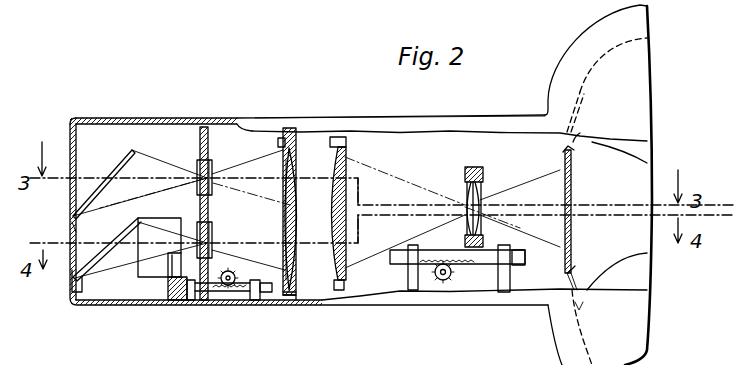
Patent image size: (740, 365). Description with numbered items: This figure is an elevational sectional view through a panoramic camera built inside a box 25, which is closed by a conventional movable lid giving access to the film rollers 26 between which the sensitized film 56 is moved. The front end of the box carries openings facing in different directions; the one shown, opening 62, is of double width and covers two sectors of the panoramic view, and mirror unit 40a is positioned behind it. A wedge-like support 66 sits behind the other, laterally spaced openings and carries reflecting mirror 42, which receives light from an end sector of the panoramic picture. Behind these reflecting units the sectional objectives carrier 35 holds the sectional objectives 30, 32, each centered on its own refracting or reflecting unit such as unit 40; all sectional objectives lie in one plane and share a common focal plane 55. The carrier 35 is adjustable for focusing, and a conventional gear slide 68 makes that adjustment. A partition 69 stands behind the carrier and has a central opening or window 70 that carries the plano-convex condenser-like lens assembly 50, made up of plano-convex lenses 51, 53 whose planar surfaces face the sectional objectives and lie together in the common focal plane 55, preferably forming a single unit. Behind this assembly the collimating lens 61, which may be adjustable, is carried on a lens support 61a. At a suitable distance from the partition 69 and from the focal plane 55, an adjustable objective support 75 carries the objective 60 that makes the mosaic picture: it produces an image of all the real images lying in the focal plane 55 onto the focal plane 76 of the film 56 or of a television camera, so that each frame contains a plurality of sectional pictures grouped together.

The box 25 is at (157, 305).
The film rollers 26 is at (627, 345).
The sectional objective 30 is at (212, 172).
The sectional objective 32 is at (212, 255).
The sectional objectives carrier 35 is at (210, 210).
The refracting or reflecting unit 40 is at (108, 177).
The mirror unit 40a is at (107, 245).
The reflecting mirror 42 is at (140, 268).
The plano-convex condenser-like lens assembly 50 is at (285, 120).
The plano-convex lens 51 is at (292, 163).
The plano-convex lens 53 is at (297, 262).
The common focal plane 55 is at (287, 197).
The film 56 is at (585, 130).
The objective 60 is at (483, 197).
The collimating lens 61 is at (347, 162).
The lens support 61a is at (346, 282).
The opening 62 is at (72, 228).
The wedge-like support 66 is at (176, 292).
The gear slide 68 is at (245, 293).
The partition 69 is at (292, 292).
The central opening or window 70 is at (292, 280).
The adjustable objective support 75 is at (443, 253).
The focal plane 76 is at (565, 193).